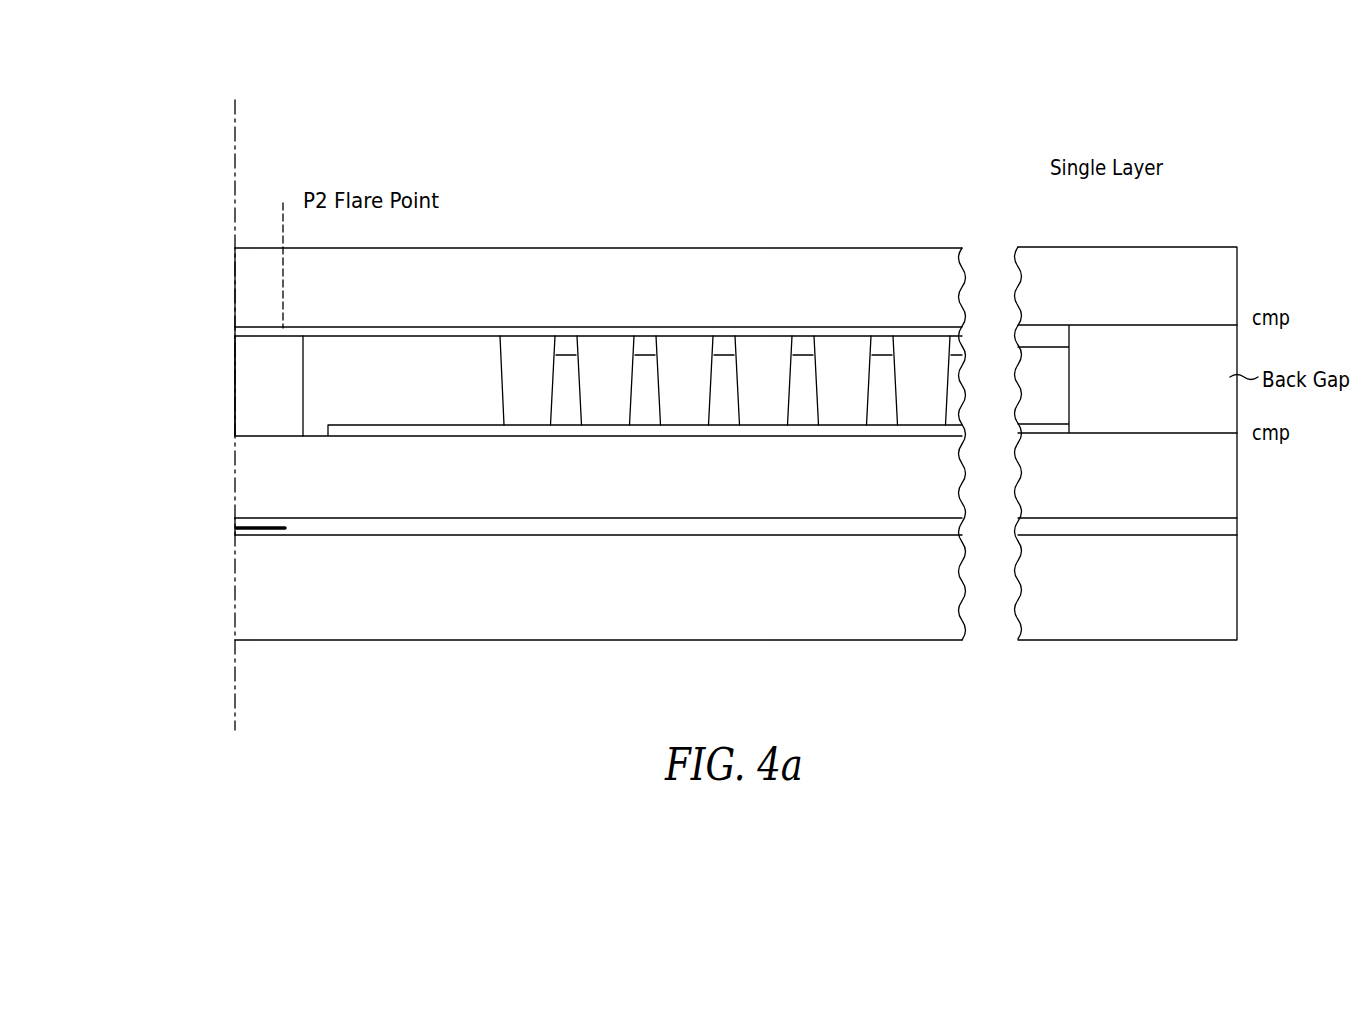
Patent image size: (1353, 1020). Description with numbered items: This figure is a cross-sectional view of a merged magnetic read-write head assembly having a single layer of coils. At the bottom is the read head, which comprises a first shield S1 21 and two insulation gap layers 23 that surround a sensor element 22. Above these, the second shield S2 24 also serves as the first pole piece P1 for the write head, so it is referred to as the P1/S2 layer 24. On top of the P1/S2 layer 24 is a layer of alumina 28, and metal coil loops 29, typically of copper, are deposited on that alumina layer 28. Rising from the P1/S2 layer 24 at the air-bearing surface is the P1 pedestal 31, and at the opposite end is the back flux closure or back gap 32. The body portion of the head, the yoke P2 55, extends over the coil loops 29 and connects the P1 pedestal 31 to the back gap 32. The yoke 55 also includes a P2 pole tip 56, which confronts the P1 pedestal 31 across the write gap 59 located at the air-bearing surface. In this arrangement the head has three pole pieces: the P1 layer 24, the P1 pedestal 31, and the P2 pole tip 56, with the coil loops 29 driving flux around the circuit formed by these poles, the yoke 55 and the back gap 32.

The first shield S1 21 is at (432, 643).
The sensor element 22 is at (230, 527).
The insulation gap layers 23 is at (402, 538).
The second shield S2 / first pole piece P1 24 is at (854, 494).
The layer of alumina 28 is at (418, 425).
The metal coil loops 29 is at (602, 352).
The P1 pedestal 31 is at (236, 410).
The back flux closure (back gap) 32 is at (1163, 392).
The yoke P2 55 is at (825, 252).
The P2 pole tip 56 is at (235, 266).
The write gap 59 is at (235, 332).